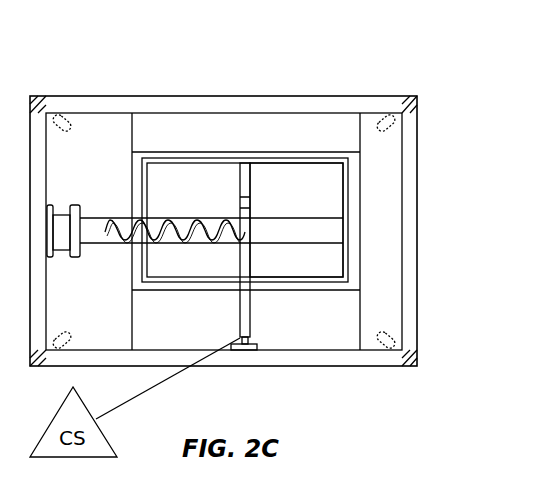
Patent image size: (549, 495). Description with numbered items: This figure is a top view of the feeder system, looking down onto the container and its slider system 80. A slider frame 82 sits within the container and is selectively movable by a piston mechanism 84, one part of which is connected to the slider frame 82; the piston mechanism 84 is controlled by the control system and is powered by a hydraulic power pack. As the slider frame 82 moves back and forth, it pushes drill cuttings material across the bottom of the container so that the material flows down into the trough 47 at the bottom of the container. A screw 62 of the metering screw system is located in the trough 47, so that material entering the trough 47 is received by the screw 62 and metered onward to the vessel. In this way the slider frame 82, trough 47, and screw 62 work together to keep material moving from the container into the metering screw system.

The slider system 80 is at (177, 156).
The slider frame 82 is at (290, 177).
The trough 47 is at (320, 220).
The screw 62 is at (150, 248).
The piston mechanism 84 is at (253, 302).